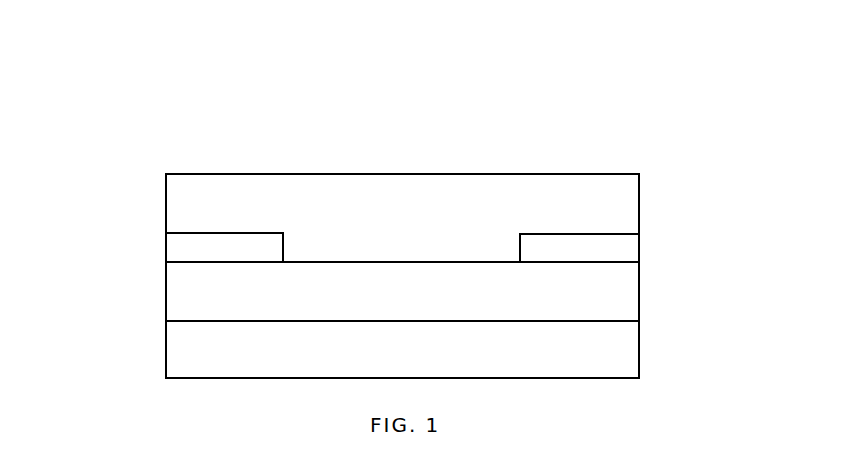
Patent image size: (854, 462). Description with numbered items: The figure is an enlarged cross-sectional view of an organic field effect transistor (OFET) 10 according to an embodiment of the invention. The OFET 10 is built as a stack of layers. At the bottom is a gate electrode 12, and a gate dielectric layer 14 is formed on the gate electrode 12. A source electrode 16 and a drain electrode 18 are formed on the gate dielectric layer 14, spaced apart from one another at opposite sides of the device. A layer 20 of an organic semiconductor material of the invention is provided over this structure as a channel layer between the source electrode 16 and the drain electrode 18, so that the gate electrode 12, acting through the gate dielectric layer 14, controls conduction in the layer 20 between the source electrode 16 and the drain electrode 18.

The organic field effect transistor 10 is at (405, 127).
The gate electrode 12 is at (609, 352).
The gate dielectric layer 14 is at (207, 292).
The source electrode 16 is at (223, 245).
The drain electrode 18 is at (602, 246).
The layer of organic semiconductor material 20 is at (373, 225).